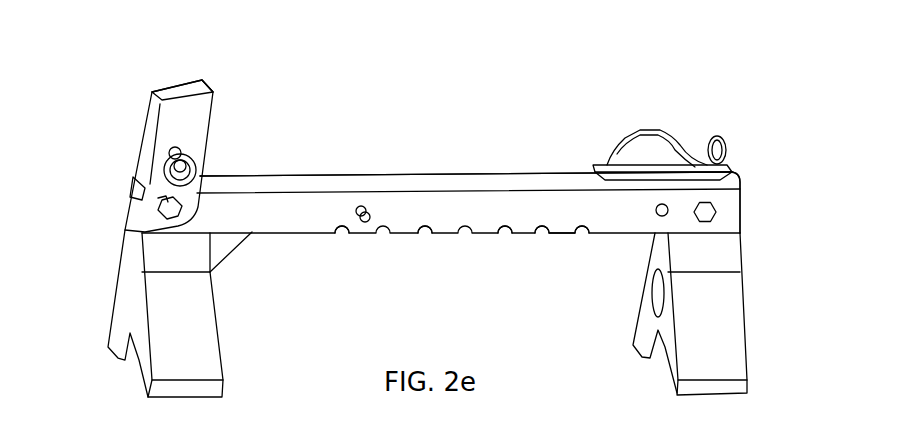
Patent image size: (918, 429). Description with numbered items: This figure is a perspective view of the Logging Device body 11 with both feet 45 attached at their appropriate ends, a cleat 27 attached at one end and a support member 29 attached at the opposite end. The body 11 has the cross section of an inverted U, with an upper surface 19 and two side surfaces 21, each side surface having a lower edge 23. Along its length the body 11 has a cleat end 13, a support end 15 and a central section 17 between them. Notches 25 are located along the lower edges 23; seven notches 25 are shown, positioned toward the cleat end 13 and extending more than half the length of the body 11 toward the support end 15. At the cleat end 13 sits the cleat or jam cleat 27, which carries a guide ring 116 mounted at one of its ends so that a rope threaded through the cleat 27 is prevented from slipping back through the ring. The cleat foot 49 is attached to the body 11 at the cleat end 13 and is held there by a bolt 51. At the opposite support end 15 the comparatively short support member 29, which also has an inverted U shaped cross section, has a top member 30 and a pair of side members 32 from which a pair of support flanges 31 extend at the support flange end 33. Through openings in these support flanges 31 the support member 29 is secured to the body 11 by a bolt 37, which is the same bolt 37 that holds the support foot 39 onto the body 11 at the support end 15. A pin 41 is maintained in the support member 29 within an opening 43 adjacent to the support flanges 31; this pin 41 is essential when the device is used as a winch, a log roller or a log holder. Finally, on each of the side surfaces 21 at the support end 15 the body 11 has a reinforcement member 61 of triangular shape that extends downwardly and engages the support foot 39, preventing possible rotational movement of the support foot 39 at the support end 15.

The body 11 is at (413, 173).
The cleat end 13 is at (743, 197).
The support end 15 is at (212, 198).
The central section 17 is at (443, 233).
The upper surface 19 is at (303, 180).
The side surfaces 21 is at (560, 215).
The lower edge 23 is at (283, 233).
The notches 25 is at (502, 228).
The cleat 27 is at (637, 128).
The support member 29 is at (147, 113).
The top member 30 is at (133, 165).
The support flanges 31 is at (143, 233).
The side members 32 is at (215, 92).
The support flange end 33 is at (132, 183).
The bolt 37 is at (153, 215).
The support foot 39 is at (110, 327).
The pin 41 is at (176, 154).
The opening 43 is at (172, 153).
The feet 45 is at (748, 363).
The cleat foot 49 is at (668, 383).
The bolt 51 is at (718, 215).
The reinforcement member 61 is at (227, 258).
The guide ring 116 is at (723, 140).